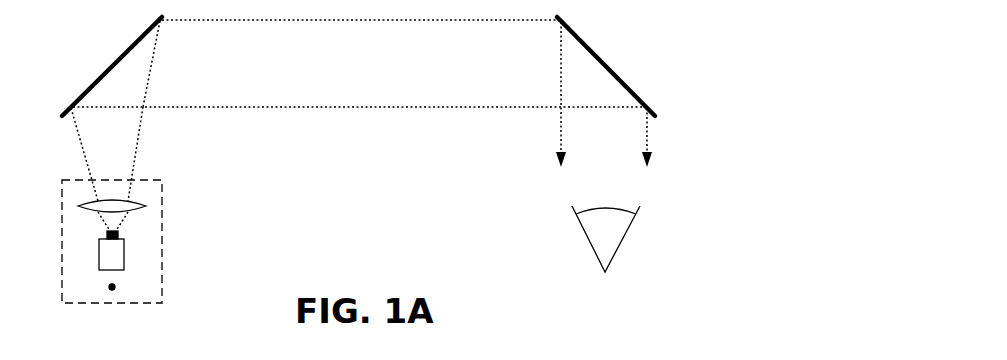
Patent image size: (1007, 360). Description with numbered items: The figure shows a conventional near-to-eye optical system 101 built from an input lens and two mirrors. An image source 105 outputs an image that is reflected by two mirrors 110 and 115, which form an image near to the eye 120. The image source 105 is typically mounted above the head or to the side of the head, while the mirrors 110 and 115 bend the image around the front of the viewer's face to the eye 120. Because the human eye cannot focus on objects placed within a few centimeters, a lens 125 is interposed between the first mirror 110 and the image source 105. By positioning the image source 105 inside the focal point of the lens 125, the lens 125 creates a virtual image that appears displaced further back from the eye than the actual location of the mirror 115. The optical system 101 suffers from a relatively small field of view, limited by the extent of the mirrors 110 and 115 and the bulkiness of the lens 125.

The near-to-eye optical system 101 is at (366, 162).
The image source 105 is at (99, 252).
The first mirror 110 is at (76, 93).
The second mirror 115 is at (617, 73).
The eye 120 is at (621, 240).
The lens 125 is at (86, 203).